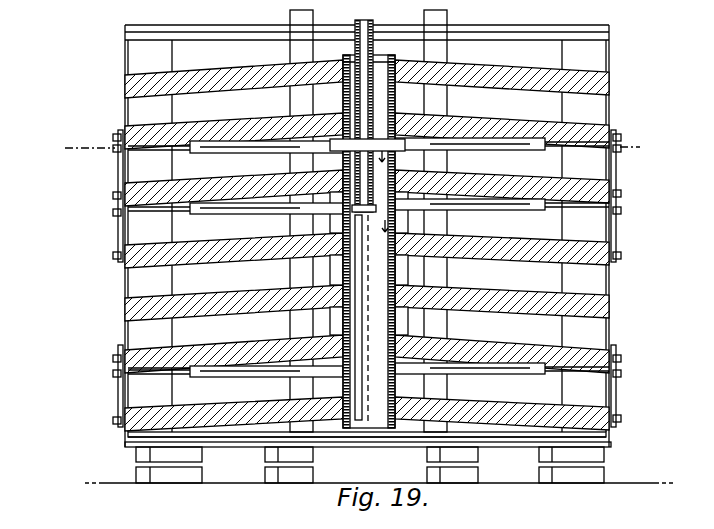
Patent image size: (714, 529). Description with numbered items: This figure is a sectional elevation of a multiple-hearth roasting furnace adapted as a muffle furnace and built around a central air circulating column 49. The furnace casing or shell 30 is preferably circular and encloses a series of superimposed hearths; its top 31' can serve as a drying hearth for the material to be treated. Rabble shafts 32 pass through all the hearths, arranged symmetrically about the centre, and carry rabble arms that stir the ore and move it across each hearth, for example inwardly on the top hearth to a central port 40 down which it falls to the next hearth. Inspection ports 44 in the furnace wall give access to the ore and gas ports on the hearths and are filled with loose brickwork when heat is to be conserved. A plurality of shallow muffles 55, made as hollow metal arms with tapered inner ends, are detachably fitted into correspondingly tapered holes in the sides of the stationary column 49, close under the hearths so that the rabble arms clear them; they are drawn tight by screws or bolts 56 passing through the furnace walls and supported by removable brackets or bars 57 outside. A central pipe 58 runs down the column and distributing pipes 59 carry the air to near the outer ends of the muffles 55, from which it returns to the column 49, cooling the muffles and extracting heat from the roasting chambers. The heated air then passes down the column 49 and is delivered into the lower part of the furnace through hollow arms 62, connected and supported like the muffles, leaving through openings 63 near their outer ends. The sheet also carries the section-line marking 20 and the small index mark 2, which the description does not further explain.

The machine 2 is at (435, 278).
The section line 20 is at (351, 147).
The furnace casing or shell 30 is at (610, 319).
The top of the furnace 31' is at (367, 239).
The rabble shafts 32 is at (290, 52).
The central port 40 is at (406, 250).
The inspection ports 44 is at (584, 105).
The central stationary column 49 is at (410, 98).
The shallow muffles 55 is at (208, 153).
The screws or bolts 56 is at (574, 150).
The removable brackets or bars 57 is at (116, 191).
The central pipe 58 is at (354, 51).
The distributing pipes 59 is at (272, 152).
The hollow arms 62 is at (247, 374).
The openings 63 is at (197, 377).